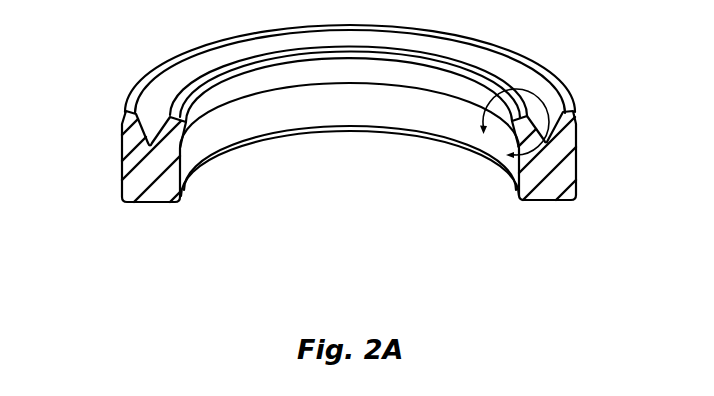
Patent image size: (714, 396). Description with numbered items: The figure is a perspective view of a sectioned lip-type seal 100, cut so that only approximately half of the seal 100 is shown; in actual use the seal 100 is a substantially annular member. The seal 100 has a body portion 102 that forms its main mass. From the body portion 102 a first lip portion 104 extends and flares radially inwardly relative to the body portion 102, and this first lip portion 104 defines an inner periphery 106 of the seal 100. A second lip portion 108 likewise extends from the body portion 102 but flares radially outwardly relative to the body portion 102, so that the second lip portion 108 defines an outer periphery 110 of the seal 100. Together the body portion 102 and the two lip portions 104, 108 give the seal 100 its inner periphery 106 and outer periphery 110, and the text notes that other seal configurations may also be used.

The lip-type seal 100 is at (350, 173).
The body portion 102 is at (576, 182).
The first lip portion 104 is at (185, 131).
The inner periphery 106 is at (190, 126).
The second lip portion 108 is at (121, 142).
The outer periphery 110 is at (121, 130).